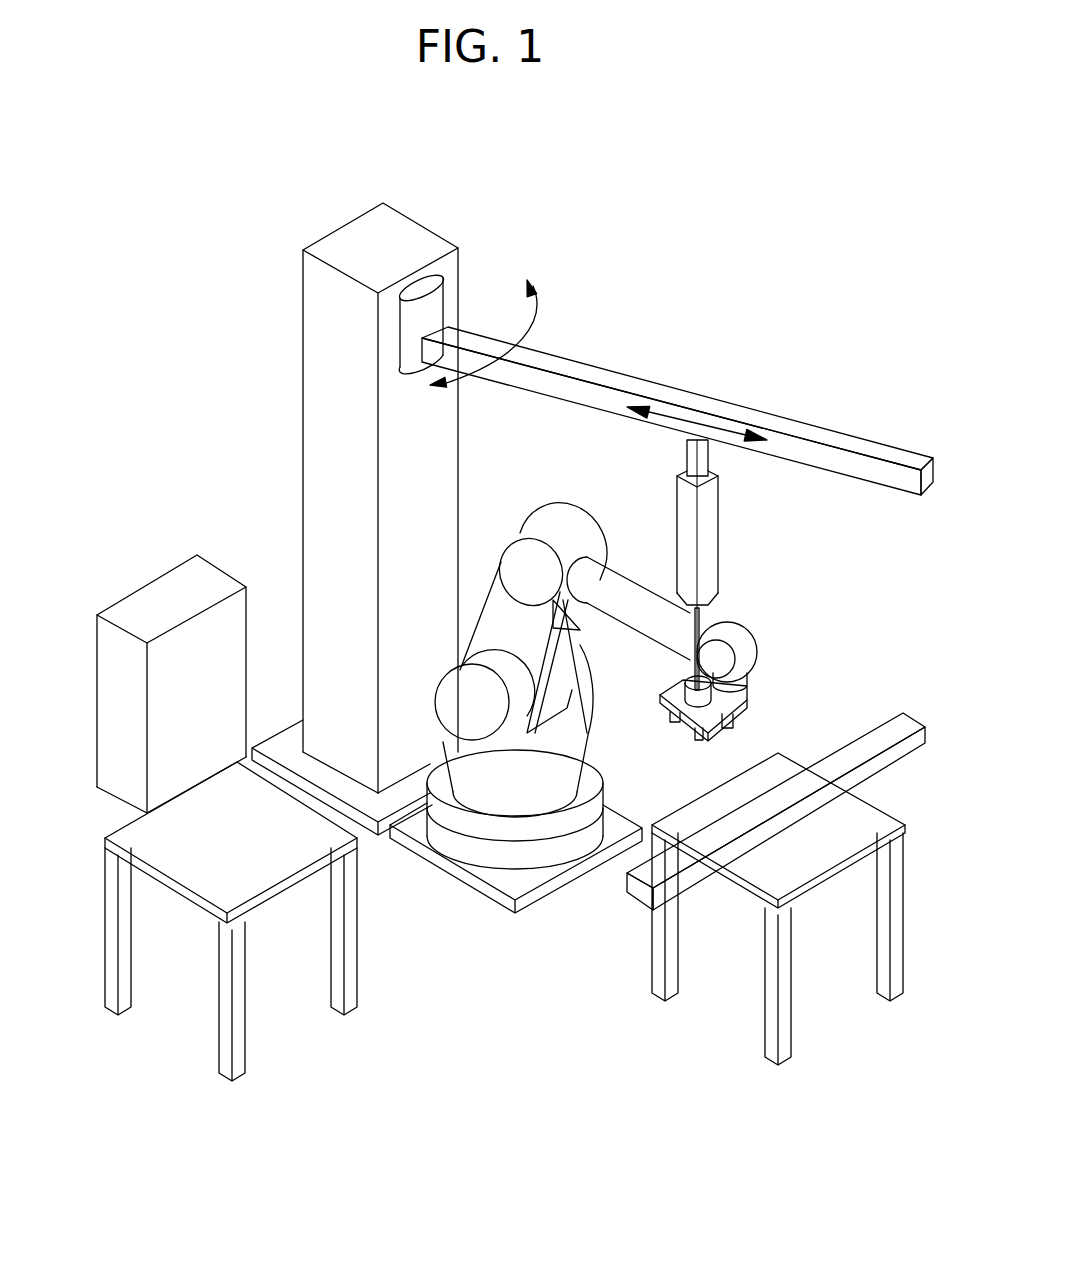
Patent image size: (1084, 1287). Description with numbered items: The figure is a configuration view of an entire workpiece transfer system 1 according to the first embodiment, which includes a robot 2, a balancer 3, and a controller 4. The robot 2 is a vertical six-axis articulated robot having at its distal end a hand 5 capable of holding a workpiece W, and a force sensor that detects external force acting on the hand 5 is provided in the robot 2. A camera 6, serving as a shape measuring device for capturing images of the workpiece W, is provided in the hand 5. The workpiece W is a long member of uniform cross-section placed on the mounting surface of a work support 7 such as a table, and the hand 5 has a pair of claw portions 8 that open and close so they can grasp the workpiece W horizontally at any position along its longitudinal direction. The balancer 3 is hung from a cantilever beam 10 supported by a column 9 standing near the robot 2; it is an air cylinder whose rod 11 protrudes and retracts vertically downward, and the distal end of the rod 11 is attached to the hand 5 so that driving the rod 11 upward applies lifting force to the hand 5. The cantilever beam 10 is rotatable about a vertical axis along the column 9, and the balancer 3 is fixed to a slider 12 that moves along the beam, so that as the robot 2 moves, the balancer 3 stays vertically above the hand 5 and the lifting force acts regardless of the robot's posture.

The workpiece transfer system 1 is at (108, 335).
The robot 2 is at (512, 505).
The balancer 3 is at (709, 518).
The controller 4 is at (152, 562).
The hand 5 is at (648, 688).
The camera 6 is at (737, 733).
The work support 7 is at (283, 885).
The claw portions 8 is at (670, 730).
The column 9 is at (303, 362).
The cantilever beam 10 is at (790, 415).
The rod 11 is at (722, 632).
The slider 12 is at (684, 441).
The workpiece W is at (878, 742).